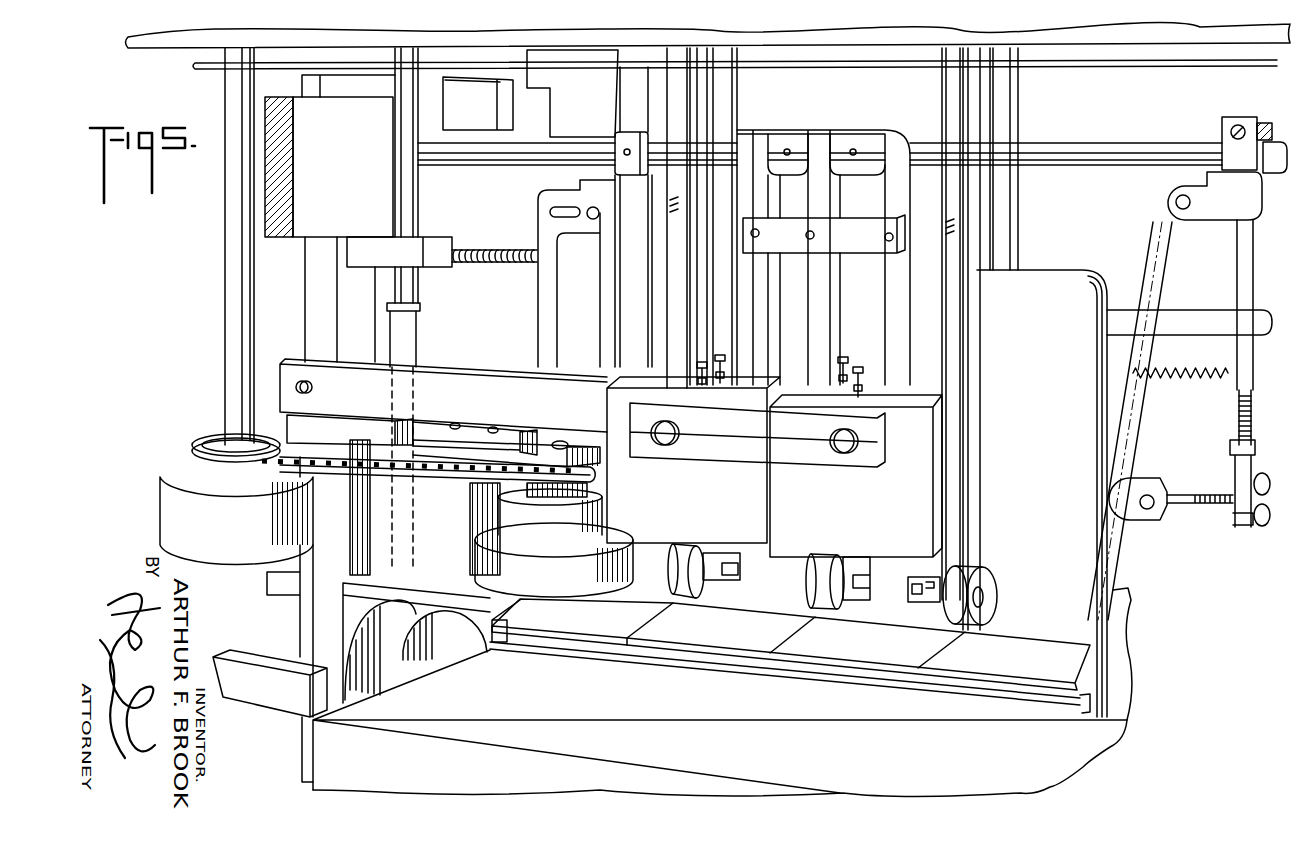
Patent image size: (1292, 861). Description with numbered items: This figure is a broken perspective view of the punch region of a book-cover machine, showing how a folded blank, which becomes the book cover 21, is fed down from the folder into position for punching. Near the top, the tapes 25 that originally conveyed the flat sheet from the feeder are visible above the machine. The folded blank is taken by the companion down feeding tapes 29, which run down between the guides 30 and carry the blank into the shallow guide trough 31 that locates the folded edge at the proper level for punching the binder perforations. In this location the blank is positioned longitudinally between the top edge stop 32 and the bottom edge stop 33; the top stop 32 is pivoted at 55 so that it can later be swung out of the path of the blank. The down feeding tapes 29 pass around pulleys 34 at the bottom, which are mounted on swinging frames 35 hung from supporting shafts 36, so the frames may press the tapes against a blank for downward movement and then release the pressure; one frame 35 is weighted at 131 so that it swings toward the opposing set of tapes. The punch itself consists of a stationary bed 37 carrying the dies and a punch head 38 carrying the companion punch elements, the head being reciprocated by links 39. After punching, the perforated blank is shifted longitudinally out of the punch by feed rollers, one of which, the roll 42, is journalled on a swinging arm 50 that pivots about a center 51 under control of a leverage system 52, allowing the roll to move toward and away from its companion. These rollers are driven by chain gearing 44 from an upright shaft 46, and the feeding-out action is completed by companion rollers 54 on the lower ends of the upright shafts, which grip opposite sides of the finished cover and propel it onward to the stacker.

The book cover 21 is at (1063, 280).
The tapes 25 is at (1175, 64).
The down feeding tapes 29 is at (703, 120).
The guides 30 is at (630, 115).
The guide trough 31 is at (518, 600).
The top edge guide or stop 32 is at (540, 305).
The bottom edge guide or stop 33 is at (1160, 262).
The pulleys 34 is at (702, 588).
The swinging frames 35 is at (755, 318).
The supporting shafts 36 is at (1033, 143).
The stationary bed 37 is at (1037, 647).
The punch head 38 is at (616, 741).
The links 39 is at (483, 633).
The feed roller 42 is at (557, 580).
The chain gearing 44 is at (193, 440).
The upright shaft 46 is at (227, 337).
The swinging arm 50 is at (550, 600).
The center 51 is at (417, 285).
The leverage system 52 is at (432, 92).
The companion rollers 54 is at (167, 507).
The pivot 55 is at (613, 172).
The weight 131 is at (793, 538).